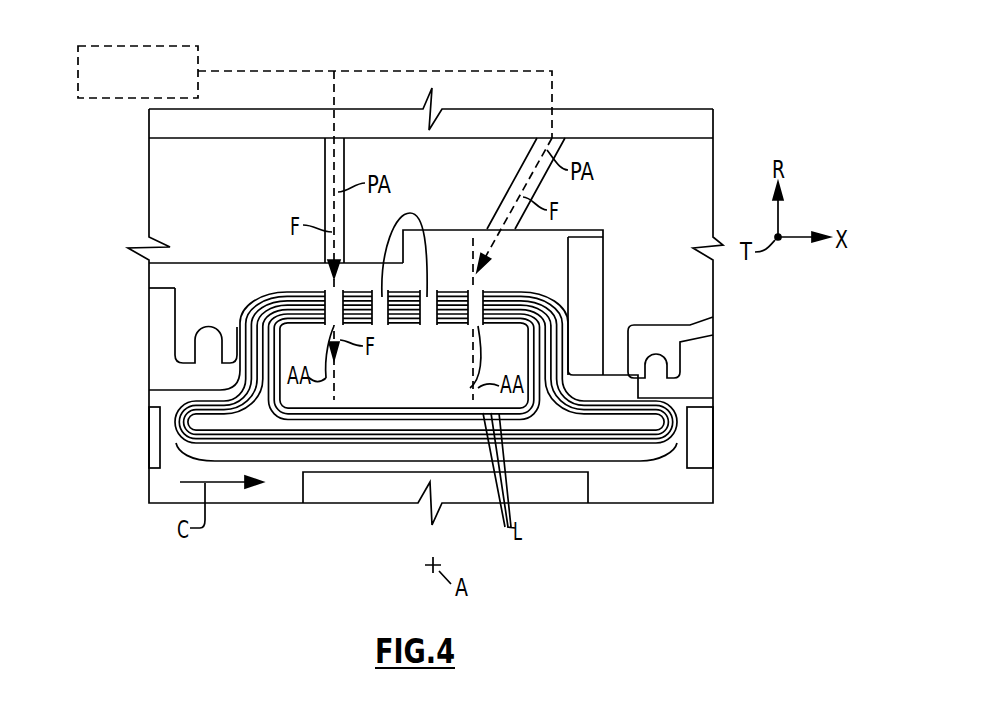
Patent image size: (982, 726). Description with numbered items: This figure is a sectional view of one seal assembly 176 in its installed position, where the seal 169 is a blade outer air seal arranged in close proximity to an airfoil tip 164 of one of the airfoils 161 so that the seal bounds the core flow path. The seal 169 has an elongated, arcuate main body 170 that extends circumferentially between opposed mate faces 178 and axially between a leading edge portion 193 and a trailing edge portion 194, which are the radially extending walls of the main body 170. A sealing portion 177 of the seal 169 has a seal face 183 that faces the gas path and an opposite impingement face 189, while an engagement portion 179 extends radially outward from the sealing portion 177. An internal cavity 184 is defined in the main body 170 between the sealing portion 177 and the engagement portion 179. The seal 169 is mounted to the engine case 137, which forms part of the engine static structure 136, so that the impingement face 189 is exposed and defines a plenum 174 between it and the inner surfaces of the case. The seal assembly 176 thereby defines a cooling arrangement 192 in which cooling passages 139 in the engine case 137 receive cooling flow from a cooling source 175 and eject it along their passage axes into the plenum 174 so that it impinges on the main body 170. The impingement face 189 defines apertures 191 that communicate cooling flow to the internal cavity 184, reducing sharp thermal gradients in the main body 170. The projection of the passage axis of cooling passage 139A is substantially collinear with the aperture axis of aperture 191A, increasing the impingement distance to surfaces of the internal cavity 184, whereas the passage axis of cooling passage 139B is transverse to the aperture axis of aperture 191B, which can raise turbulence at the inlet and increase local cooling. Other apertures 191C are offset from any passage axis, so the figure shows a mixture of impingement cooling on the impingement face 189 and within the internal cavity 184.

The cooling source 175 is at (157, 83).
The cooling arrangement 192 is at (600, 104).
The seal assembly 176 is at (126, 168).
The engine static structure 136 is at (110, 240).
The engine case 137 is at (163, 210).
The cooling passages 139 is at (382, 200).
The cooling passage 139A is at (325, 176).
The cooling passage 139B is at (518, 170).
The plenum 174 is at (467, 264).
The seal 169 is at (538, 280).
The main body 170 is at (570, 302).
The engagement portion 179 is at (575, 318).
The apertures 191 is at (431, 323).
The aperture 191A is at (330, 378).
The aperture 191B is at (470, 388).
The apertures 191C is at (415, 218).
The internal cavity 184 is at (466, 316).
The impingement face 189 is at (508, 291).
The leading edge portion 193 is at (237, 327).
The trailing edge portion 194 is at (572, 348).
The mate faces 178 is at (653, 420).
The seal face 183 is at (645, 462).
The sealing portion 177 is at (630, 453).
The airfoil tip 164 is at (332, 468).
The airfoils 161 is at (303, 490).